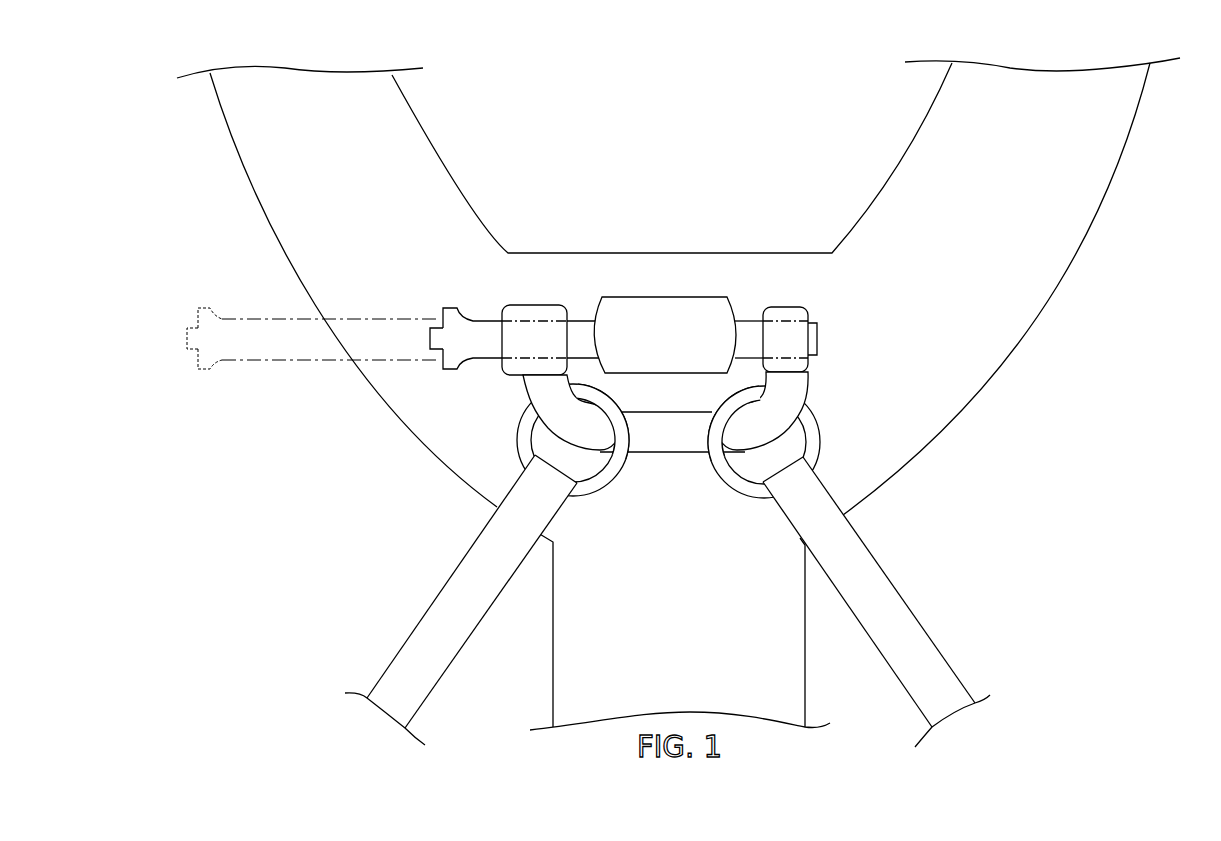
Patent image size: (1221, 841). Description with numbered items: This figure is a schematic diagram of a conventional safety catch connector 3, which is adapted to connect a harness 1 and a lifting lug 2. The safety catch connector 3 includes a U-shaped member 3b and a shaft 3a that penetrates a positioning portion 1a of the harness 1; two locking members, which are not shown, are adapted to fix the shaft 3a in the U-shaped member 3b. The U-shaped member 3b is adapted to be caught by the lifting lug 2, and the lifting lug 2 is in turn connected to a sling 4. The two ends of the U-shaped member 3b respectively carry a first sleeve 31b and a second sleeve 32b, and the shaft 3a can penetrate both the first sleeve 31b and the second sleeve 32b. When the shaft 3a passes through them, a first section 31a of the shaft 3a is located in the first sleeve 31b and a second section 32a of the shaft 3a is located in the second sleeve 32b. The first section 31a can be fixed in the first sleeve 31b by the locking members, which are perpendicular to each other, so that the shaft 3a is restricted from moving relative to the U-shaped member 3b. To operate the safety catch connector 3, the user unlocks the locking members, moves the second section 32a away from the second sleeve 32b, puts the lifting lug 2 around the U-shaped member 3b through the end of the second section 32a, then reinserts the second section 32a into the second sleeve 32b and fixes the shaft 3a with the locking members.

The harness 1 is at (1108, 199).
The positioning portion 1a is at (670, 297).
The lifting lug 2 is at (813, 457).
The safety catch connector 3 is at (938, 425).
The shaft 3a is at (932, 237).
The U-shaped member 3b is at (815, 378).
The sling 4 is at (895, 630).
The first section 31a is at (547, 320).
The first sleeve 31b is at (517, 305).
The second section 32a is at (806, 308).
The second sleeve 32b is at (775, 307).